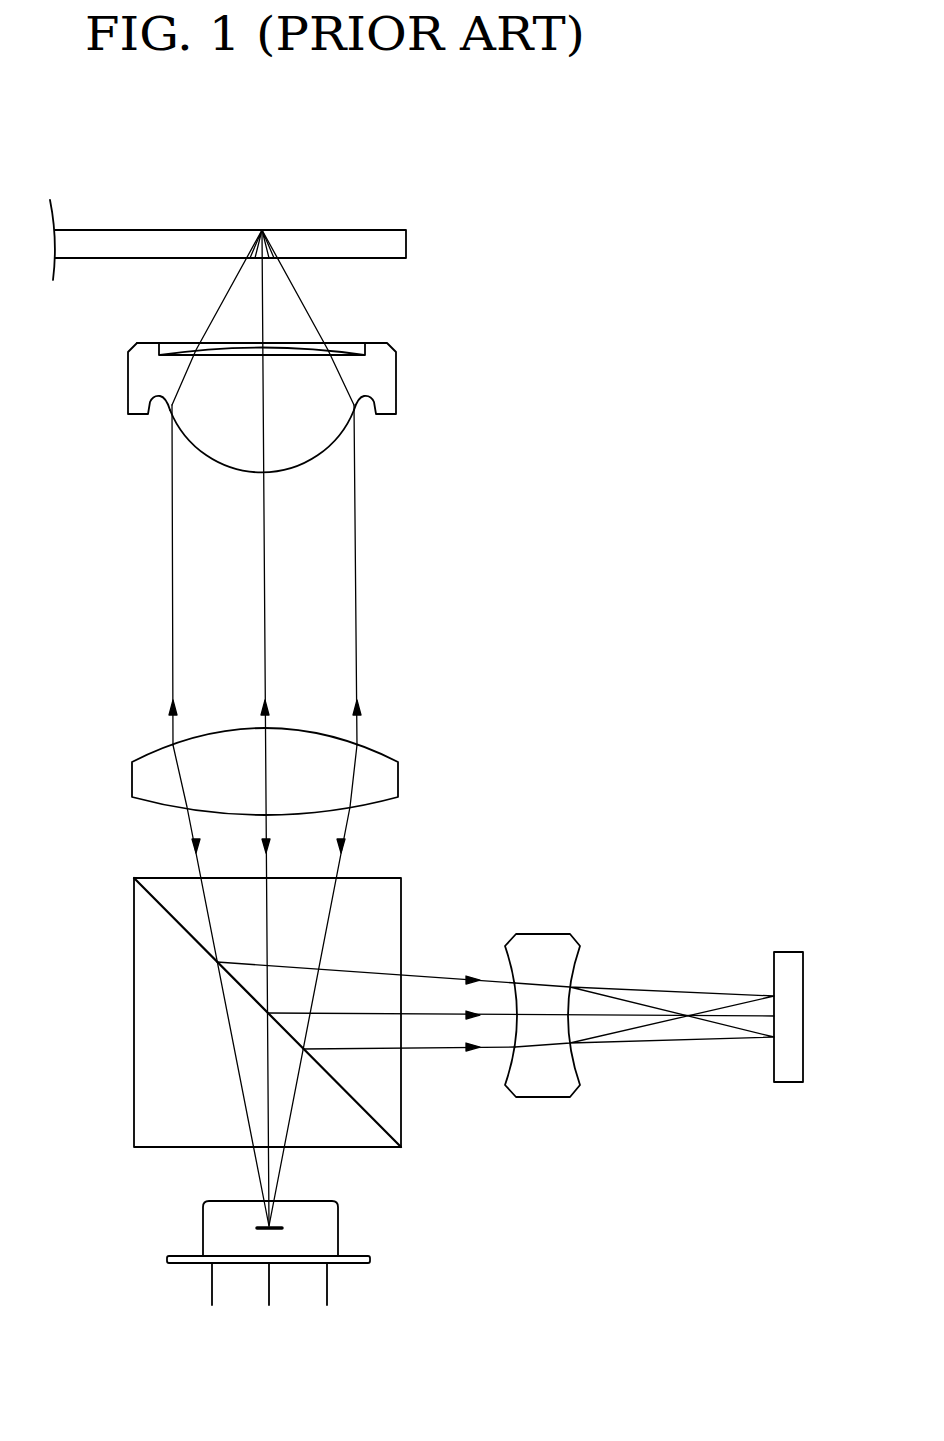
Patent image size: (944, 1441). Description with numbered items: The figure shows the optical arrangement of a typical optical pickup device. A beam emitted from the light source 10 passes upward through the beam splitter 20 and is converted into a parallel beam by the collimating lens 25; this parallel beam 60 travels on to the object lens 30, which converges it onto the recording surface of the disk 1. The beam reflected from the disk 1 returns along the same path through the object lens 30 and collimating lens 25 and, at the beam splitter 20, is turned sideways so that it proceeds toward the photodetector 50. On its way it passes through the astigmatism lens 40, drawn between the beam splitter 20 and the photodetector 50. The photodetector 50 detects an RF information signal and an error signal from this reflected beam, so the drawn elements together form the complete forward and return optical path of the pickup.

The disk 1 is at (423, 247).
The light source 10 is at (320, 1225).
The beam splitter 20 is at (398, 884).
The collimating lens 25 is at (398, 775).
The object lens 30 is at (396, 388).
The astigmatism lens 40 is at (540, 932).
The photodetector 50 is at (790, 952).
The parallel light beam 60 is at (358, 640).